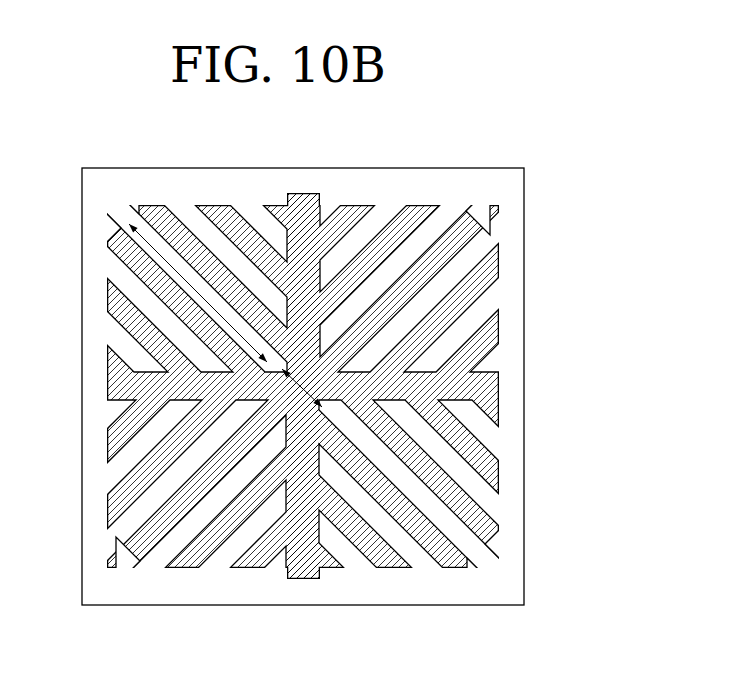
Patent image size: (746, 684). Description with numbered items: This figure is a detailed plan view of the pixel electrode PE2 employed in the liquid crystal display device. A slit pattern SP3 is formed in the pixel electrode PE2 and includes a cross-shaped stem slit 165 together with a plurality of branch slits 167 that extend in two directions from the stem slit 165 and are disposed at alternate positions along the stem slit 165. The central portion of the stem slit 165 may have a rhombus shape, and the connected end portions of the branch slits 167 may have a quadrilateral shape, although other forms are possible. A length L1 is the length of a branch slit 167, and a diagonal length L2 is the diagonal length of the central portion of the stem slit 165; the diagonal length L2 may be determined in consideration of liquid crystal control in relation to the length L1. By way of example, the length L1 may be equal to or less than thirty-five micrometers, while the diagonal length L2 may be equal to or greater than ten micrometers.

The pixel electrode PE2 is at (342, 397).
The stem slit 165 is at (307, 553).
The branch slits 167 is at (486, 533).
The slit pattern SP3 is at (215, 562).
The length of the branch slit L1 is at (158, 252).
The diagonal length of the central portion of the stem slit L2 is at (282, 376).